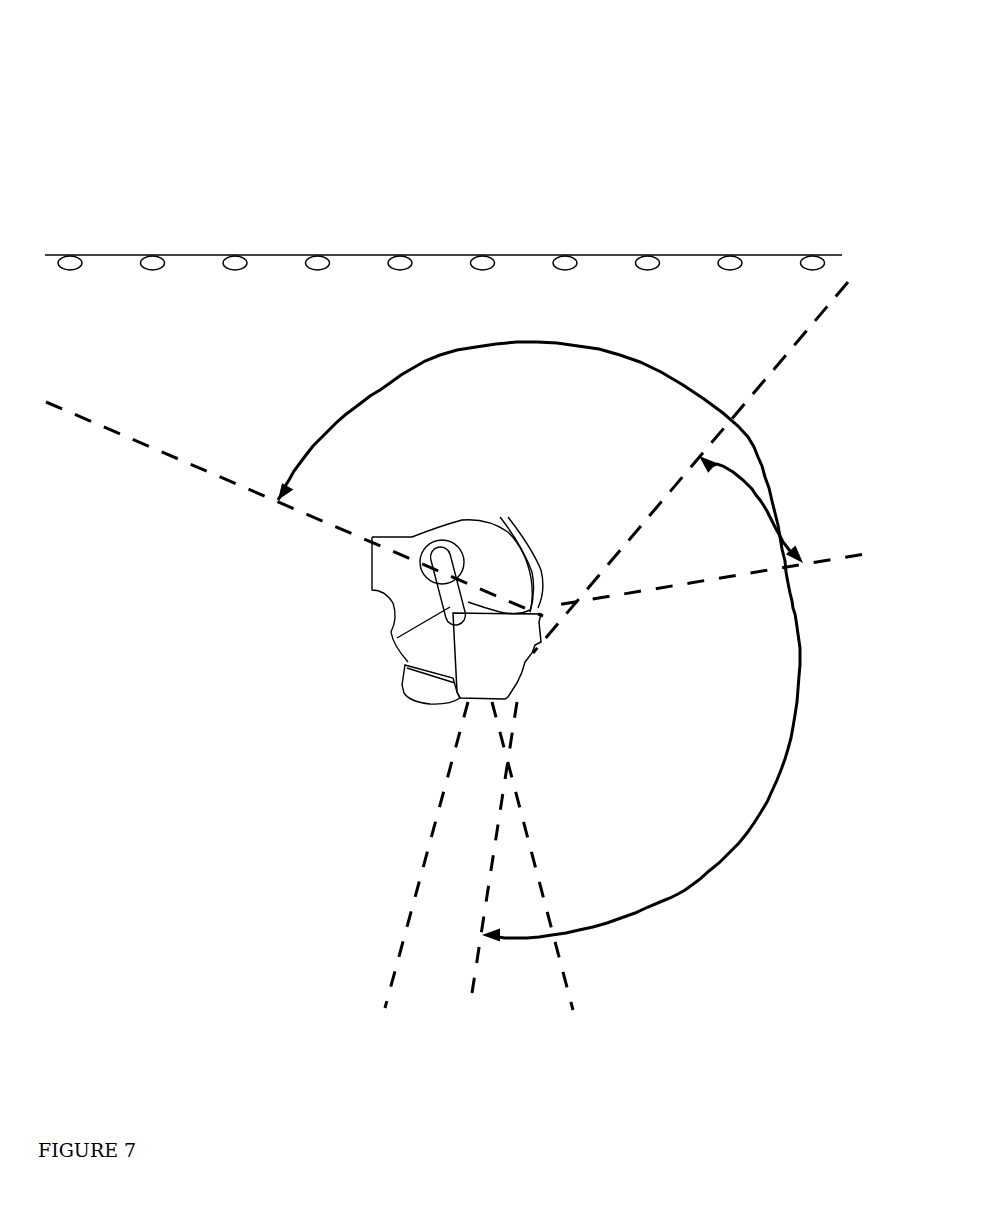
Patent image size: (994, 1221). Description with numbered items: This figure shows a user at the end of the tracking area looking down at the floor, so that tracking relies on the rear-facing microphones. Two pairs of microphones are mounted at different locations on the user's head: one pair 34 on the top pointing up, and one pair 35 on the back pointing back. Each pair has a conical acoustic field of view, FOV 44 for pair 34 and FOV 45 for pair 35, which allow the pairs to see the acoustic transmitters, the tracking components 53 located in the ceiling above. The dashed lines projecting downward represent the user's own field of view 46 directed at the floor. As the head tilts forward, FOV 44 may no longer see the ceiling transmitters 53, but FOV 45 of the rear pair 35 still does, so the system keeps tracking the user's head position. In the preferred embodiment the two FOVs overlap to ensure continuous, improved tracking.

The tracking components 53 is at (484, 238).
The microphone pair 35 is at (549, 592).
The microphone pair 34 is at (540, 683).
The acoustic field of view 45 is at (540, 455).
The acoustic field of view 44 is at (641, 767).
The user's field of view 46 is at (560, 1023).